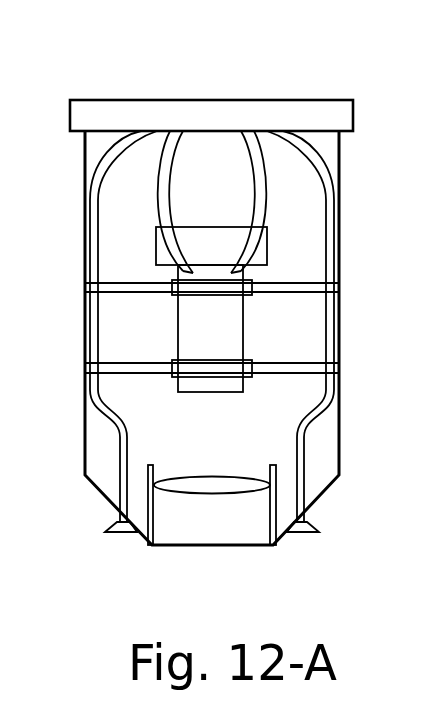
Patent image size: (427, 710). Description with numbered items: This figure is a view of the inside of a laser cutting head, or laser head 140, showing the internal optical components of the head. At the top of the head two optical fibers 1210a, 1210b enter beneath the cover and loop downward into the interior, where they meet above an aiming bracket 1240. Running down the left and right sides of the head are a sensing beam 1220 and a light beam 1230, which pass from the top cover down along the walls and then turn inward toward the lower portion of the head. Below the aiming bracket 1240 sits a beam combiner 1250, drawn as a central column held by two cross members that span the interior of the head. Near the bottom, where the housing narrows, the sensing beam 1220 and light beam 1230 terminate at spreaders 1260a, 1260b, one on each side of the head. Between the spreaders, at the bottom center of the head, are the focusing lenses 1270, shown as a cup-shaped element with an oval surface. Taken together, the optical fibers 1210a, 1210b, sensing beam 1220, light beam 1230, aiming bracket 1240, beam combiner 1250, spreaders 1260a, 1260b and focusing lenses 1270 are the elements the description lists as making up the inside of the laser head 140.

The laser cutting head 140 is at (213, 46).
The optical fiber 1210a is at (172, 131).
The optical fiber 1210b is at (240, 131).
The sensing beam 1220 is at (107, 156).
The light beam 1230 is at (323, 168).
The aiming bracket 1240 is at (156, 247).
The beam combiner 1250 is at (178, 323).
The spreader 1260a is at (115, 535).
The spreader 1260b is at (295, 535).
The focusing lenses 1270 is at (230, 495).